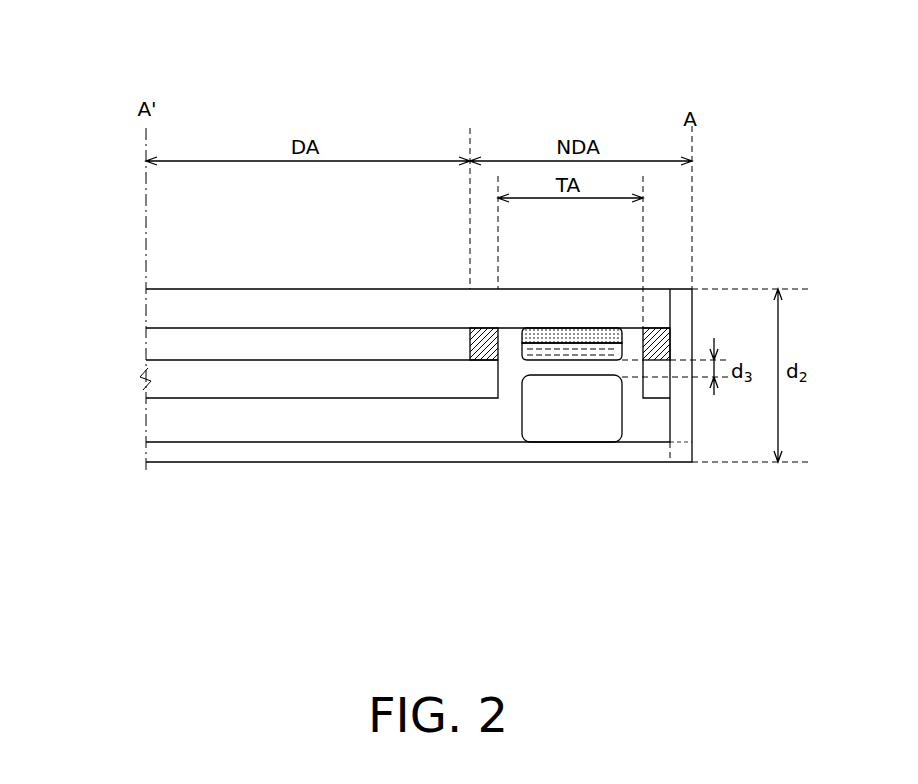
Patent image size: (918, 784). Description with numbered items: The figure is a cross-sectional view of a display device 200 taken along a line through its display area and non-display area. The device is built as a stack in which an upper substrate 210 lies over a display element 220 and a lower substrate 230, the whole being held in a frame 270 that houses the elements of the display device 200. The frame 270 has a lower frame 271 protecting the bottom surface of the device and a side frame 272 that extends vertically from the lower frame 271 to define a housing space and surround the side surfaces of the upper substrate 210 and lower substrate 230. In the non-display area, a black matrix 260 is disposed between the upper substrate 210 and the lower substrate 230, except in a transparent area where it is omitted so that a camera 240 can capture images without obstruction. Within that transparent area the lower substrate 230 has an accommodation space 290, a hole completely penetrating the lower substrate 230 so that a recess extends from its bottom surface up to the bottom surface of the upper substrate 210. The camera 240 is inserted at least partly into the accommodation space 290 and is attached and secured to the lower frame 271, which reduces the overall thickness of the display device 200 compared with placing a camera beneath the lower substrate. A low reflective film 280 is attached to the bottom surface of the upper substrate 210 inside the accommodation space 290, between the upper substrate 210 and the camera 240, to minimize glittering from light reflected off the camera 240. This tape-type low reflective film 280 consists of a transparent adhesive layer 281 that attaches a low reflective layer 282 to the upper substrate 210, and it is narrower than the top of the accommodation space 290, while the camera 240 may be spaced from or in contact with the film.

The display device 200 is at (738, 58).
The upper substrate 210 is at (164, 303).
The display element 220 is at (164, 337).
The lower substrate 230 is at (164, 378).
The camera 240 is at (598, 417).
The black matrix 260 is at (483, 342).
The frame 270 is at (607, 468).
The lower frame 271 is at (605, 448).
The side frame 272 is at (672, 481).
The low reflective film 280 is at (551, 444).
The transparent adhesive layer 281 is at (538, 335).
The low reflective layer 282 is at (588, 352).
The accommodation space 290 is at (509, 347).